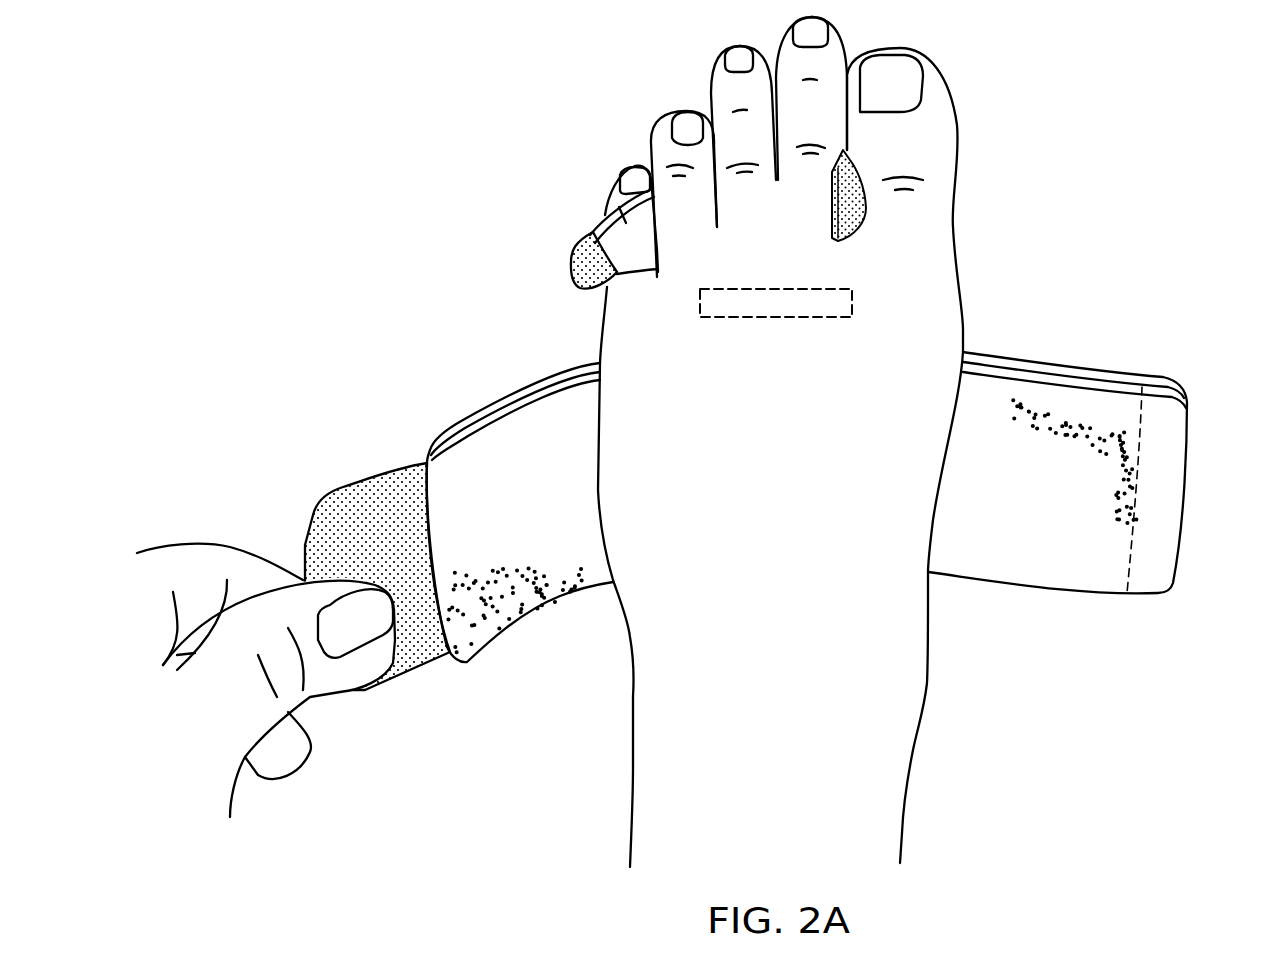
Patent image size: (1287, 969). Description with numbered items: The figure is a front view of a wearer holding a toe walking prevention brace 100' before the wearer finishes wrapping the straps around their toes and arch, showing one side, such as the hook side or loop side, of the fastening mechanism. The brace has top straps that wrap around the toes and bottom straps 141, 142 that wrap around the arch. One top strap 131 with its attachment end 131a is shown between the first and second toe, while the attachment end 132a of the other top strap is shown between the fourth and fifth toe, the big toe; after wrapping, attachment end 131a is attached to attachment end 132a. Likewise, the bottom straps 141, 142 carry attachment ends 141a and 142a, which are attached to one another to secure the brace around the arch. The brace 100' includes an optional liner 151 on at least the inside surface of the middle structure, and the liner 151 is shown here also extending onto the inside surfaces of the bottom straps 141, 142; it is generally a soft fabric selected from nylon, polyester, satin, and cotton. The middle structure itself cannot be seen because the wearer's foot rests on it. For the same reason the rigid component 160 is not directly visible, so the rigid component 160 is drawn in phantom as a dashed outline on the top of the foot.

The toe walking prevention brace 100' is at (870, 442).
The top strap 131 is at (608, 203).
The attachment end 131a is at (582, 250).
The attachment end 132a is at (862, 220).
The bottom strap 141 is at (518, 627).
The attachment end 141a is at (367, 490).
The bottom strap 142 is at (1047, 593).
The attachment end 142a is at (1167, 532).
The liner 151 is at (990, 430).
The rigid component 160 is at (770, 320).